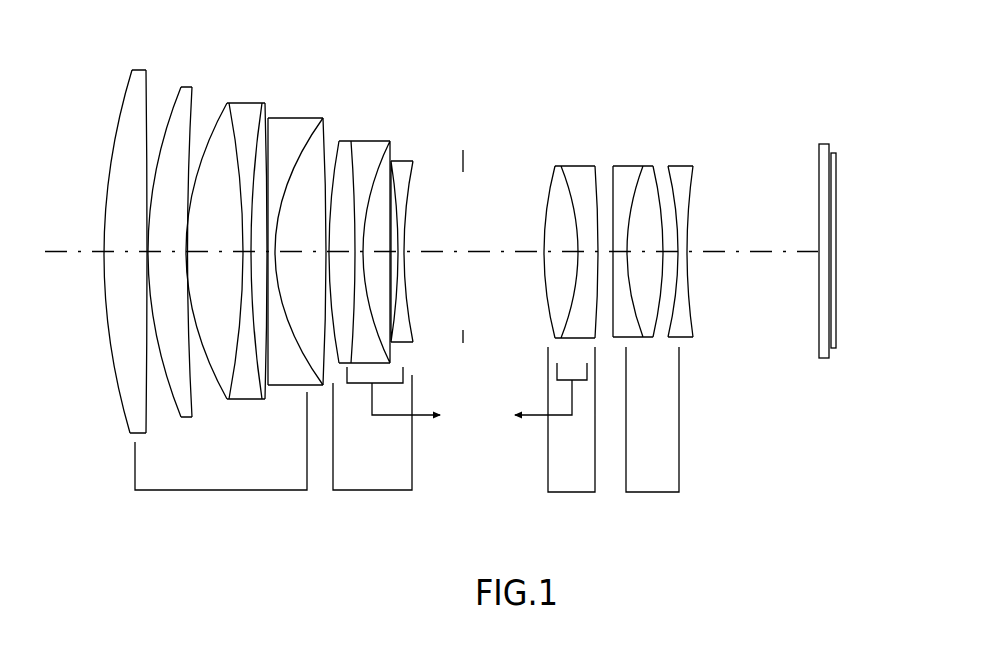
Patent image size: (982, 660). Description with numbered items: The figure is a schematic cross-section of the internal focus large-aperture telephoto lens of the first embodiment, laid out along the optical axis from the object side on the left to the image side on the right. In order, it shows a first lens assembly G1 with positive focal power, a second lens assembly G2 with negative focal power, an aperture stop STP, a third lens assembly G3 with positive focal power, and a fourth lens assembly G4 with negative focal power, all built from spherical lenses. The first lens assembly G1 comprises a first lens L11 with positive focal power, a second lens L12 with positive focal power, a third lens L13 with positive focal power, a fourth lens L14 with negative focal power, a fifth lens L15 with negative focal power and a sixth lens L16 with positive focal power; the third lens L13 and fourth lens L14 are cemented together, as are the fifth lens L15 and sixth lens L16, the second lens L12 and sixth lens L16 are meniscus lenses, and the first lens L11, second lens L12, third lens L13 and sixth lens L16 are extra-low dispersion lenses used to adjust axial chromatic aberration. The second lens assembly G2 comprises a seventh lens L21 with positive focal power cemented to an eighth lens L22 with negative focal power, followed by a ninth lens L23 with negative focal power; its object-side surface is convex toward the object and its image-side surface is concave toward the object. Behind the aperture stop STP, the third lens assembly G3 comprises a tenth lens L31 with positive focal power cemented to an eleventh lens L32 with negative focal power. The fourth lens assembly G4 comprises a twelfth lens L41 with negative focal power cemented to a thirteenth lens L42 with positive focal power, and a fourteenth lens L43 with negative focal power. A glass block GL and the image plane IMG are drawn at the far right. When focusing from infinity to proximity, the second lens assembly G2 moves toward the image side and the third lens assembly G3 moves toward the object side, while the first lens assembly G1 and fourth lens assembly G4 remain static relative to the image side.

The first lens L11 is at (125, 93).
The second lens L12 is at (181, 86).
The third lens L13 is at (228, 102).
The fourth lens L14 is at (257, 102).
The fifth lens L15 is at (298, 117).
The sixth lens L16 is at (323, 117).
The seventh lens L21 is at (348, 140).
The eighth lens L22 is at (375, 140).
The ninth lens L23 is at (403, 160).
The aperture stop STP is at (463, 150).
The tenth lens L31 is at (557, 165).
The eleventh lens L32 is at (583, 165).
The twelfth lens L41 is at (635, 165).
The thirteenth lens L42 is at (650, 165).
The fourteenth lens L43 is at (683, 165).
The glass block (cover glass / filter) GL is at (818, 162).
The image plane IMG is at (833, 157).
The first lens assembly G1 is at (221, 490).
The second lens assembly G2 is at (372, 490).
The third lens assembly G3 is at (571, 492).
The fourth lens assembly G4 is at (653, 492).